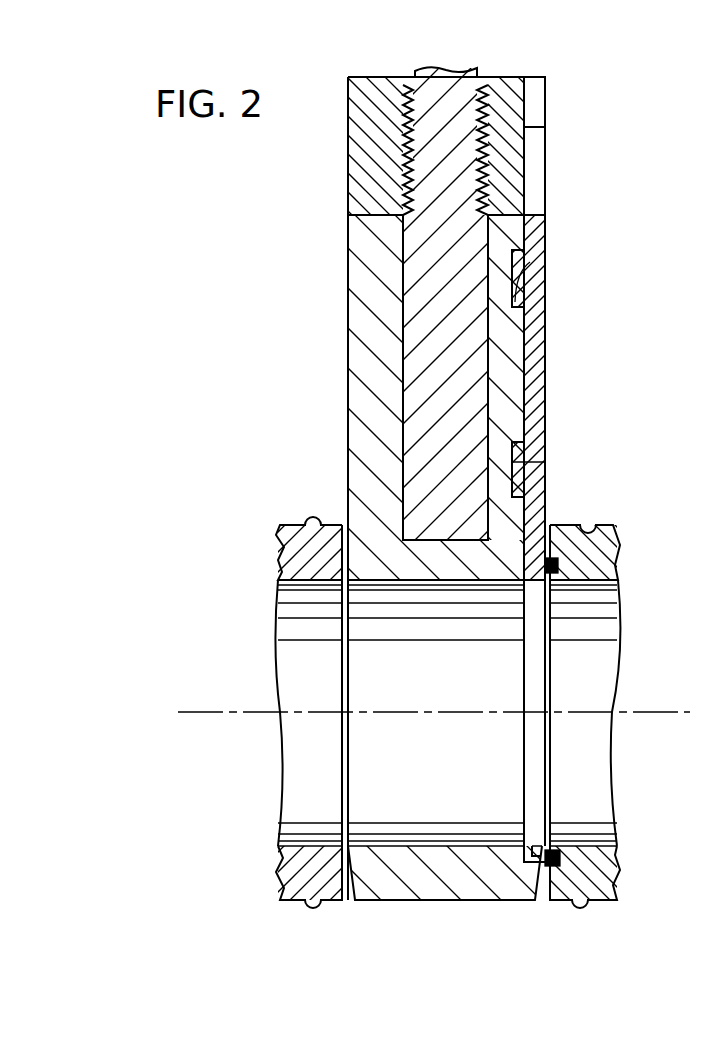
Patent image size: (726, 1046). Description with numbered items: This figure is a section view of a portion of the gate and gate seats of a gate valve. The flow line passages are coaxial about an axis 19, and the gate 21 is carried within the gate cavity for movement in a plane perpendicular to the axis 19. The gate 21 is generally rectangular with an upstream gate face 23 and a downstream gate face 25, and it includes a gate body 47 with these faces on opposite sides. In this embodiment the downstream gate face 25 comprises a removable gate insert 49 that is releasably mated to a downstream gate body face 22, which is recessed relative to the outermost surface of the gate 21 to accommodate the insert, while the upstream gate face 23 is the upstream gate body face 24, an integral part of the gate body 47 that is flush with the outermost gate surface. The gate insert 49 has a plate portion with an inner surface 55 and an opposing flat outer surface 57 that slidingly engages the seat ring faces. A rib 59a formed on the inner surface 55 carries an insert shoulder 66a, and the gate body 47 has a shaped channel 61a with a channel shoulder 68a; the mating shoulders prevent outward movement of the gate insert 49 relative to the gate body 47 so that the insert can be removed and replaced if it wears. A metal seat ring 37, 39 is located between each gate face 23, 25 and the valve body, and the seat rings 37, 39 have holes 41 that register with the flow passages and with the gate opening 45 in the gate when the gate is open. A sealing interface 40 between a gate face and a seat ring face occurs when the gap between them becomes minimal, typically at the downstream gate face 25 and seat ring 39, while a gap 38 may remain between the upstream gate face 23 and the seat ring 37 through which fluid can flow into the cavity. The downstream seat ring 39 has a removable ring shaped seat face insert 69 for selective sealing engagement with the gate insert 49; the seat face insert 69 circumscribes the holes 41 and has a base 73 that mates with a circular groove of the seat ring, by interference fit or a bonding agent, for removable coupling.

The axis 19 is at (210, 712).
The gate 21 is at (535, 180).
The downstream gate body face 22 is at (524, 345).
The upstream gate face 23 is at (348, 343).
The upstream gate body face 24 is at (348, 428).
The downstream gate face 25 is at (545, 310).
The seat ring 37 is at (302, 752).
The gap 38 is at (340, 518).
The seat ring 39 is at (598, 742).
The sealing interface 40 is at (553, 518).
The holes 41 is at (590, 582).
The gate opening 45 is at (390, 847).
The gate body 47 is at (500, 372).
The gate insert 49 is at (537, 228).
The inner surface 55 is at (525, 683).
The outer surface 57 is at (547, 445).
The rib 59a is at (513, 265).
The channel 61a is at (512, 462).
The insert shoulder 66a is at (548, 279).
The channel shoulder 68a is at (524, 424).
The seat face insert 69 is at (550, 780).
The base 73 is at (560, 862).